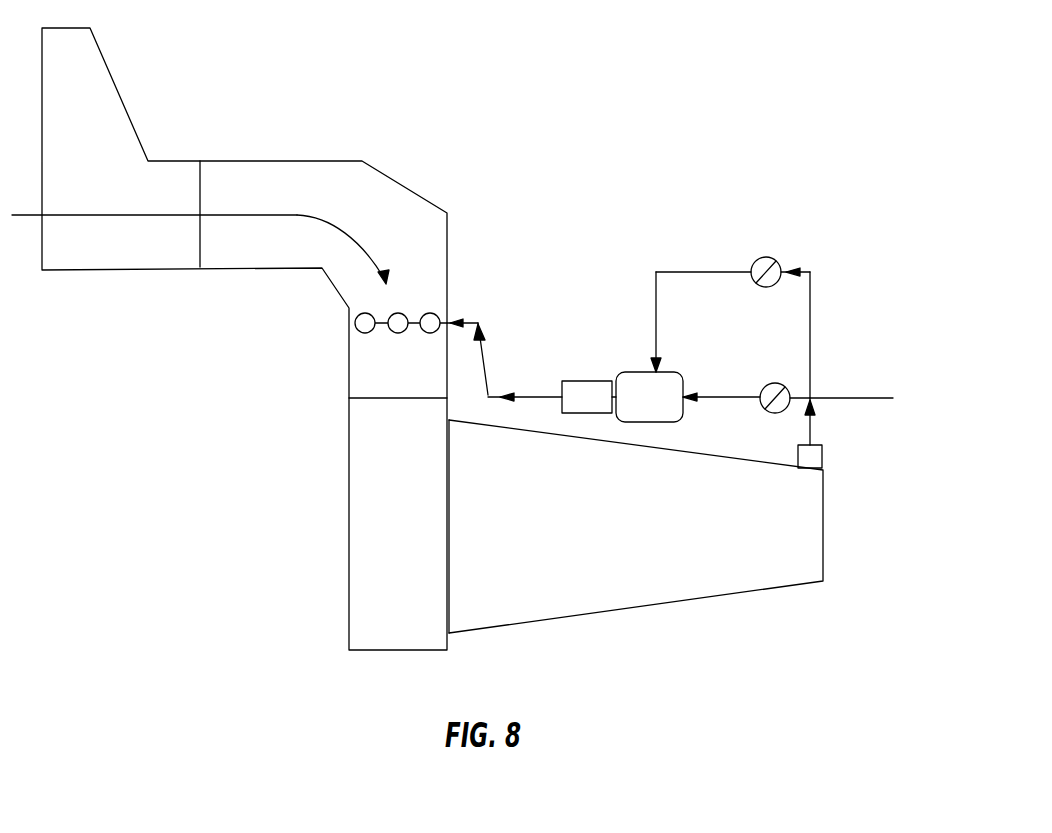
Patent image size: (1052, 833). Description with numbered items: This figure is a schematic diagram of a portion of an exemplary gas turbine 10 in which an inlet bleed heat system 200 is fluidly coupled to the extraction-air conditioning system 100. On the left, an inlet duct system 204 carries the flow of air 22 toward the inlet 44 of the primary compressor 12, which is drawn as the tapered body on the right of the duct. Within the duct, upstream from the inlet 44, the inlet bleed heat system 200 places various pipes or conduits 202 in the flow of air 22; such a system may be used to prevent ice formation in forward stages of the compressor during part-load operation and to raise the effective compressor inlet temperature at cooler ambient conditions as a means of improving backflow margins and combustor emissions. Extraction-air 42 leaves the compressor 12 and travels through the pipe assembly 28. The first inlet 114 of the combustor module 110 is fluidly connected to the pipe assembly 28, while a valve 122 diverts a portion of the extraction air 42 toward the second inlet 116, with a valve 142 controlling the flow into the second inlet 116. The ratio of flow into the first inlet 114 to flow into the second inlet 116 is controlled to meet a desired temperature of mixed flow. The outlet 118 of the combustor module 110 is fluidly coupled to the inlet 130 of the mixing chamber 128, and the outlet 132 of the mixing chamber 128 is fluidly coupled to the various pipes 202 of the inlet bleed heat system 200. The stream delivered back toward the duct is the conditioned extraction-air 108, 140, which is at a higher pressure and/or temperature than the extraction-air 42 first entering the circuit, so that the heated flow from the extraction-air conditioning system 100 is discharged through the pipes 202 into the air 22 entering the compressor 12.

The gas turbine 10 is at (636, 557).
The primary compressor 12 is at (563, 617).
The flow of air 22 is at (240, 214).
The pipe assembly 28 is at (817, 393).
The extraction-air 42 is at (813, 423).
The inlet 44 is at (450, 572).
The extraction-air conditioning system 100 is at (750, 371).
The conditioned extraction-air 108 is at (556, 336).
The combustor module 110 is at (662, 414).
The first inlet 114 is at (685, 396).
The second inlet 116 is at (657, 368).
The outlet 118 is at (662, 381).
The valve 122 is at (786, 383).
The mixing chamber 128 is at (560, 393).
The inlet 130 is at (615, 420).
The outlet 132 is at (583, 363).
The outlet duct 140 is at (487, 348).
The valve 142 is at (770, 257).
The inlet bleed heat system 200 is at (453, 316).
The pipes 202 is at (398, 333).
The inlet duct system 204 is at (258, 158).